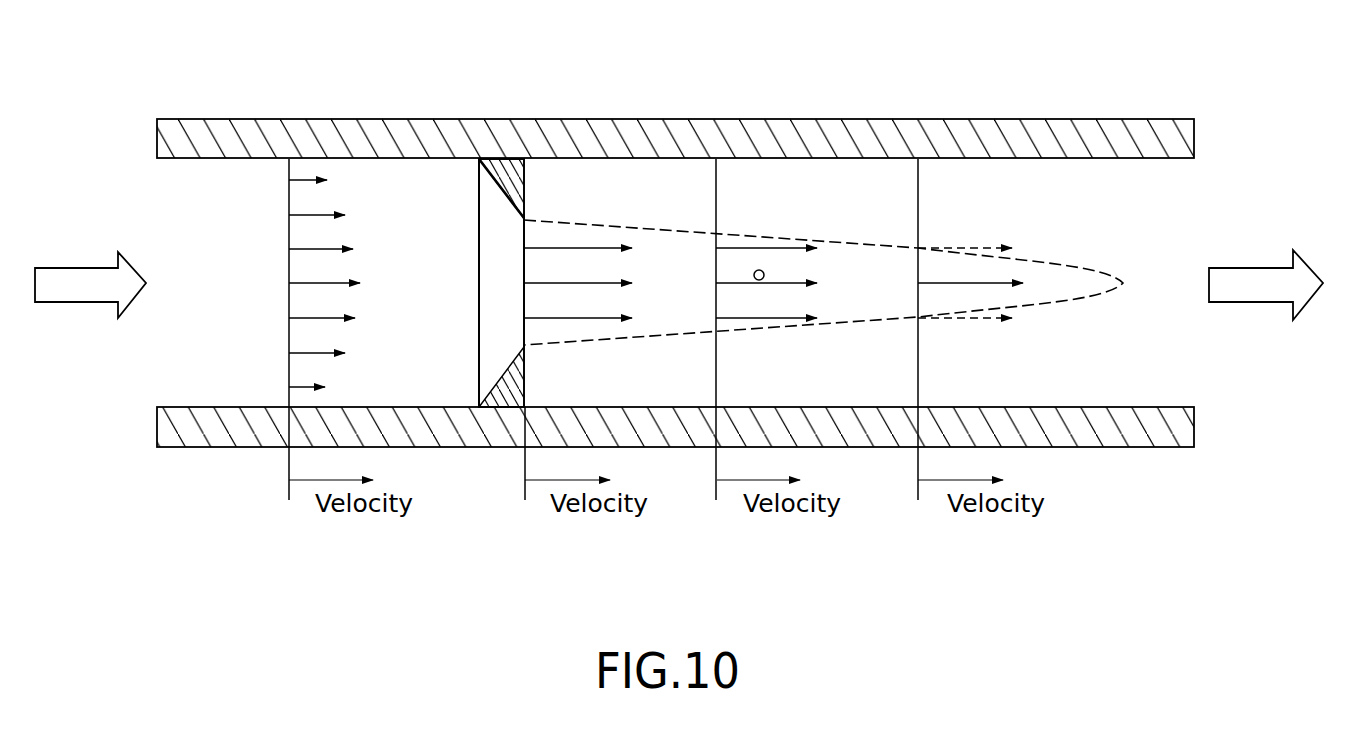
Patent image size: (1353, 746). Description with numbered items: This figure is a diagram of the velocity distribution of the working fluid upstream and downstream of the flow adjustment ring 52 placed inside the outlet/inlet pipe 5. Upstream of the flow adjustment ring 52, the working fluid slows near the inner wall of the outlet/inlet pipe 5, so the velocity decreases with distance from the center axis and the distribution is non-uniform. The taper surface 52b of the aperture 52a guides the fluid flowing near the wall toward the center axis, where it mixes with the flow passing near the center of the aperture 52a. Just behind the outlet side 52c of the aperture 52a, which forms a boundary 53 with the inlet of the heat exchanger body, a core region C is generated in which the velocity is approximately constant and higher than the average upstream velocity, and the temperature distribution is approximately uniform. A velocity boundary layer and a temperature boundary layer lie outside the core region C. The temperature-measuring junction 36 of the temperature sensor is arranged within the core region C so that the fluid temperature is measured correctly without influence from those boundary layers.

The outlet/inlet pipe 5 is at (239, 119).
The flow adjustment ring 52 is at (525, 283).
The aperture 52a is at (479, 248).
The taper surface 52b is at (507, 192).
The outlet side 52c is at (524, 386).
The boundary 53 is at (525, 295).
The temperature-measuring junction 36 is at (759, 270).
The core region C is at (852, 238).